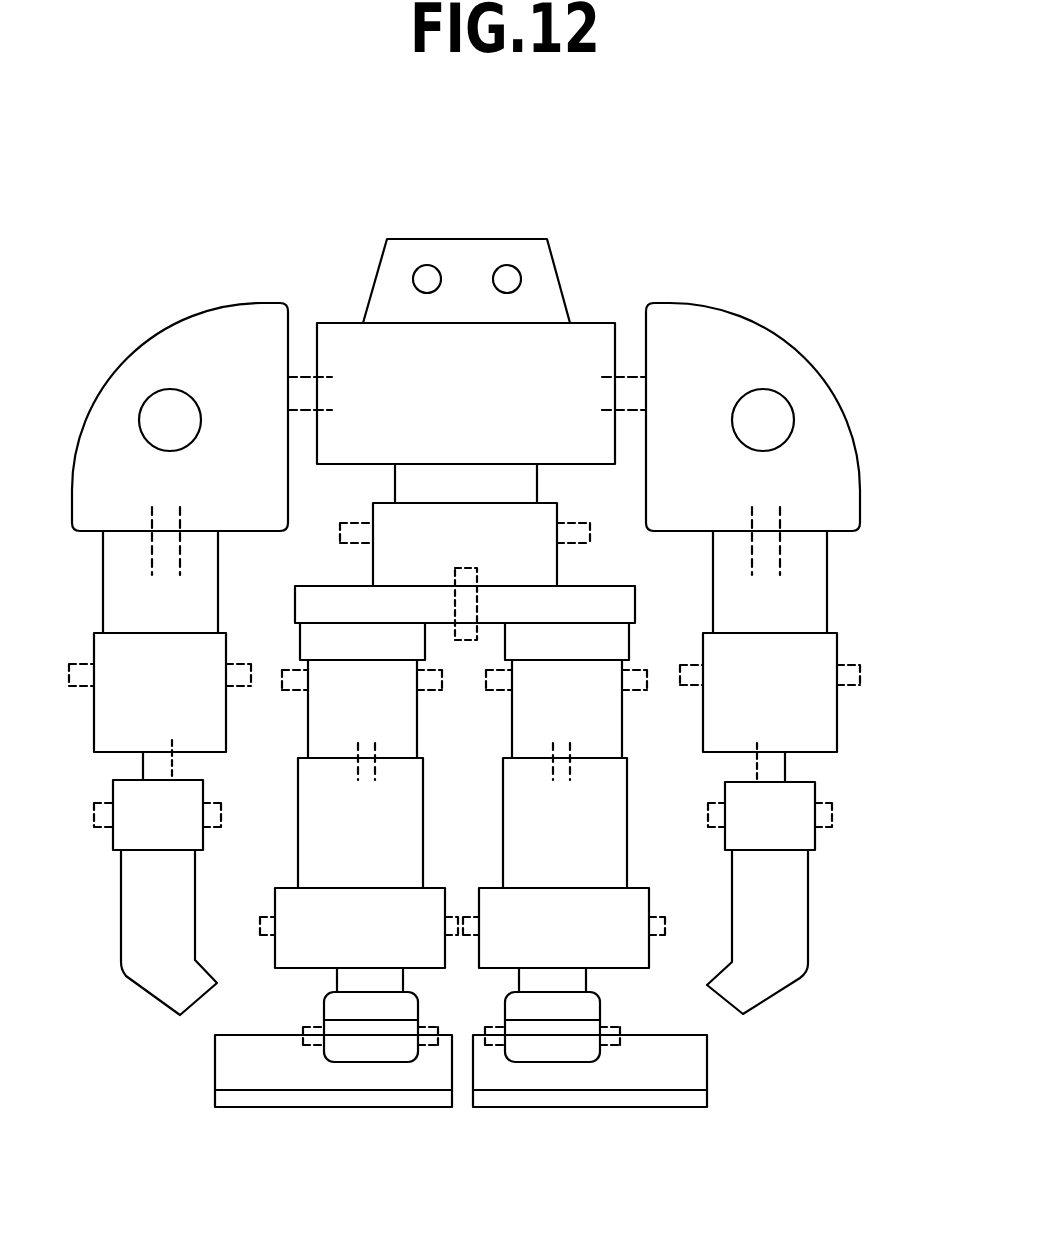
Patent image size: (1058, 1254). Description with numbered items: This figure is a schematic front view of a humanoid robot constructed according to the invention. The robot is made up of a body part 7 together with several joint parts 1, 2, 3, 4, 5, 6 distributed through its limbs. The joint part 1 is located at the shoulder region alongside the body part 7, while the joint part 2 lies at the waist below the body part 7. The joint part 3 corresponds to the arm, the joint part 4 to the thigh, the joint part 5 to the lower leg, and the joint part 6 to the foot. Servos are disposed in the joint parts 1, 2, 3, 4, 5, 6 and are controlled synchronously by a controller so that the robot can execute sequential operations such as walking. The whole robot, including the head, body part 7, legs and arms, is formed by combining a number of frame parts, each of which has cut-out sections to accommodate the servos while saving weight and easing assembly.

The joint part 1 is at (695, 332).
The joint part 2 is at (513, 547).
The joint part 3 is at (862, 543).
The joint part 4 is at (587, 710).
The joint part 5 is at (660, 758).
The joint part 6 is at (592, 1008).
The body part 7 is at (522, 388).